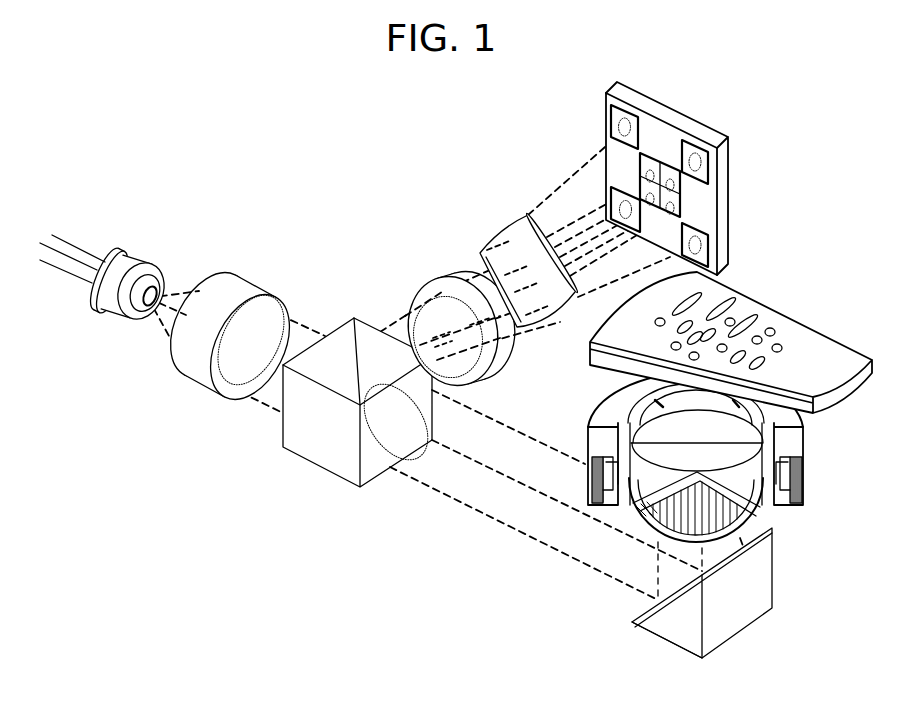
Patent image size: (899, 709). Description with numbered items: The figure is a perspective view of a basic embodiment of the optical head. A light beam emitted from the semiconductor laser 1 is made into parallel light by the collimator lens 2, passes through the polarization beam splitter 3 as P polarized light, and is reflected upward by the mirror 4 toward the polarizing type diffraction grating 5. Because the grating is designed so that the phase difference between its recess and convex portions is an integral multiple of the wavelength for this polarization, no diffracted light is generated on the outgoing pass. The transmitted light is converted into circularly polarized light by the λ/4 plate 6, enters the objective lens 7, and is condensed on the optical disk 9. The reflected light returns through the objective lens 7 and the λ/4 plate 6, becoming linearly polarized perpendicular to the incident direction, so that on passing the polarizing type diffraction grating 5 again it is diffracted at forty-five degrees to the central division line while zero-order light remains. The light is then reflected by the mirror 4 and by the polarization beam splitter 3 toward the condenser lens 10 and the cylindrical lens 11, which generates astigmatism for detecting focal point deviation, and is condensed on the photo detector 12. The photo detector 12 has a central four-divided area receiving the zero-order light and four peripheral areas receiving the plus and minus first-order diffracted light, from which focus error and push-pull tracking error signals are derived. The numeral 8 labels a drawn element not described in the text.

The semiconductor laser 1 is at (100, 312).
The collimator lens 2 is at (188, 387).
The polarization beam splitter 3 is at (290, 453).
The mirror 4 is at (643, 623).
The polarizing type diffraction grating 5 is at (725, 466).
The λ/4 plate 6 is at (733, 477).
The objective lens 7 is at (720, 442).
The coil 8 is at (807, 487).
The optical disk 9 is at (787, 330).
The condenser lens 10 is at (422, 284).
The cylindrical lens 11 is at (502, 240).
The photo detector 12 is at (647, 105).